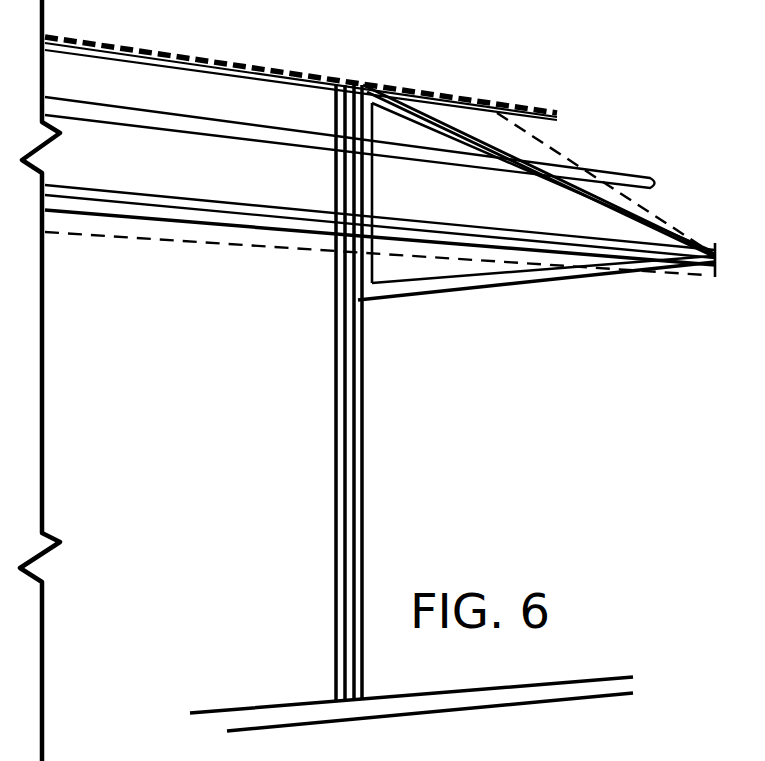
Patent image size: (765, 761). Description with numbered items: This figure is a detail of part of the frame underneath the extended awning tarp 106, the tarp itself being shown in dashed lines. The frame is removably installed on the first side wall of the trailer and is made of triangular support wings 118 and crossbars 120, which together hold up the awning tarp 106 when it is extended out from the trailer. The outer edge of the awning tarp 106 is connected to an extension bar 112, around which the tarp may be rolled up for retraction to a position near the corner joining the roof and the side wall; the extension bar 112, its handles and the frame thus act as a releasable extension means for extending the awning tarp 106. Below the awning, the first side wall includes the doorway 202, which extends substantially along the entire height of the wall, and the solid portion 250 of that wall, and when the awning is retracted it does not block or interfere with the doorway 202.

The awning tarp 106 is at (152, 97).
The triangular support wings 118 is at (437, 133).
The crossbars 120 is at (620, 243).
The extension bar 112 is at (570, 247).
The doorway 202 is at (479, 373).
The solid portion 250 is at (199, 408).